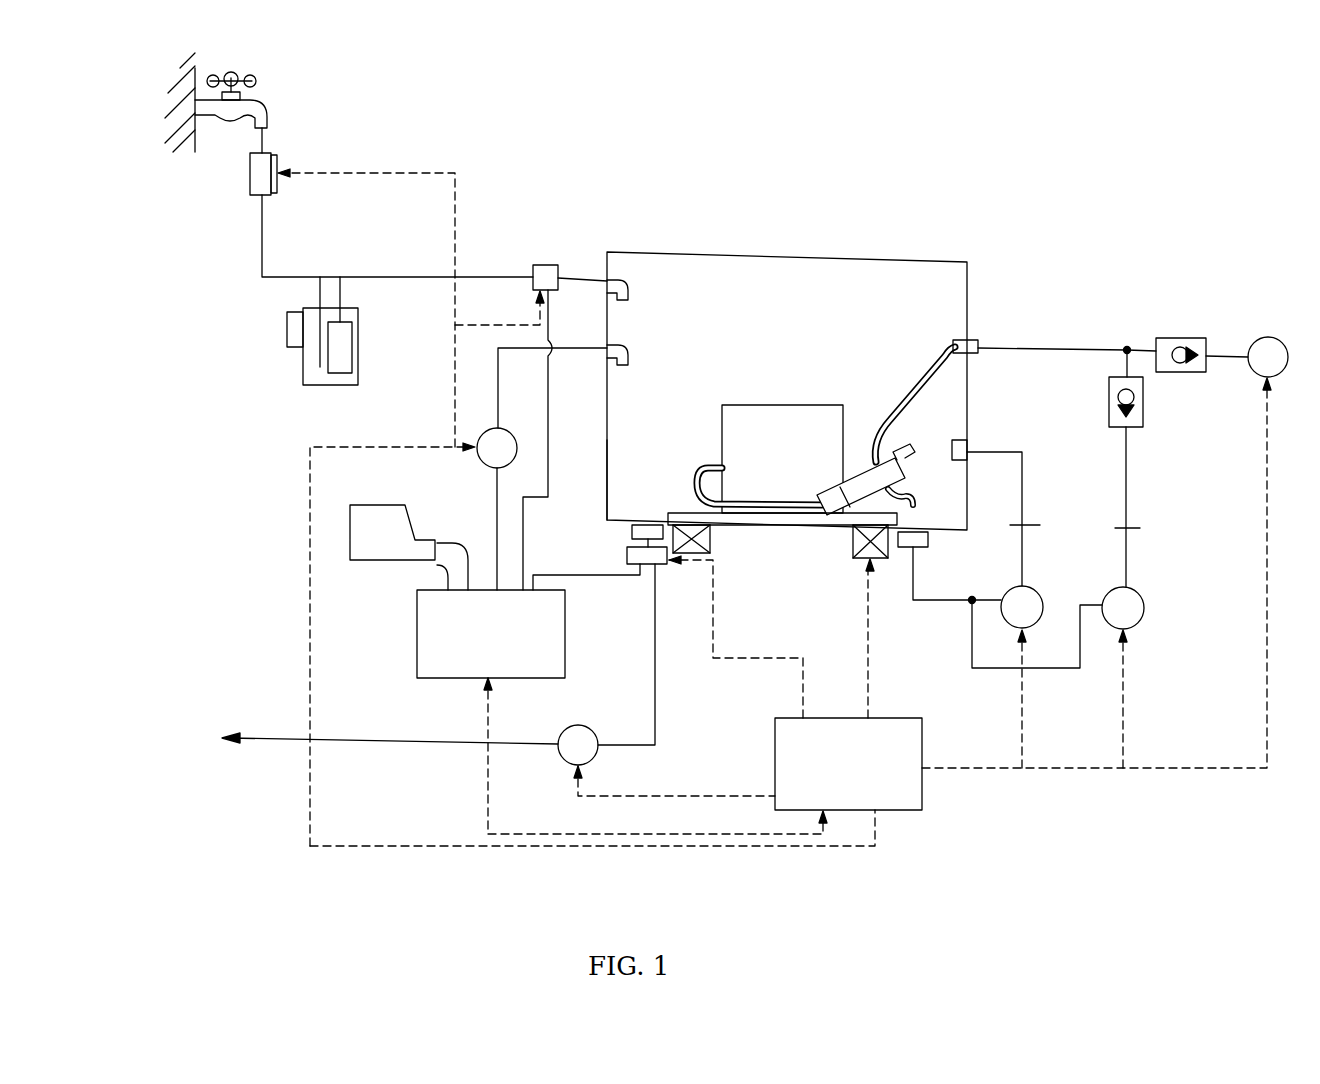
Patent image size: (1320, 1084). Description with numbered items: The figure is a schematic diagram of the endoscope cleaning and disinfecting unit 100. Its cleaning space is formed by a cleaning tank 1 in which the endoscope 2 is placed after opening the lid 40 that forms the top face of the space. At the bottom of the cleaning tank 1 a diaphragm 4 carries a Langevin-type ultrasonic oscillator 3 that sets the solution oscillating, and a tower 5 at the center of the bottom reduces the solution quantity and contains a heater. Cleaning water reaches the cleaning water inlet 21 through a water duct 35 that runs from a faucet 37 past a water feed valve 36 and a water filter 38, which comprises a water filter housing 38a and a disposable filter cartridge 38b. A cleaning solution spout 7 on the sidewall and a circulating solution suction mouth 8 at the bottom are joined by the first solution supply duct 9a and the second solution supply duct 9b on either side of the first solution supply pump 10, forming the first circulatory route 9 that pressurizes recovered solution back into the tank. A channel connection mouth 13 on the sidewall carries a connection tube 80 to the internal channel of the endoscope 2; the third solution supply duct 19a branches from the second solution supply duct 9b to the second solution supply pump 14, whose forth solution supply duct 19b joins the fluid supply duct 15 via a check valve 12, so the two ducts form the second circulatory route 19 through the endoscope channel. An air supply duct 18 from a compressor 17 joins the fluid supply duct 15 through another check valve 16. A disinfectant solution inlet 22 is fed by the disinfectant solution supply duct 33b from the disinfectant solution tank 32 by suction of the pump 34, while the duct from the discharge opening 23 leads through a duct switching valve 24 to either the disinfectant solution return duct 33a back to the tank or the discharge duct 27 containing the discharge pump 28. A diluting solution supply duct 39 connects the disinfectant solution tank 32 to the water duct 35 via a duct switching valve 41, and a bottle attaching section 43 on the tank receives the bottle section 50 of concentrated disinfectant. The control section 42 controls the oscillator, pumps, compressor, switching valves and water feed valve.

The cleaning tank 1 is at (606, 470).
The endoscope 2 is at (860, 422).
The ultrasonic oscillator 3 is at (712, 537).
The diaphragm 4 is at (800, 526).
The tower 5 is at (782, 404).
The cleaning solution spout 7 is at (970, 444).
The circulating solution suction mouth 8 is at (930, 547).
The first circulatory route 9 is at (1038, 525).
The first solution supply duct 9a is at (1023, 498).
The second solution supply duct 9b is at (940, 602).
The first solution supply pump 10 is at (1036, 590).
The check valve 12 is at (1108, 393).
The channel connection mouth 13 is at (975, 339).
The second solution supply pump 14 is at (1138, 590).
The fluid supply duct 15 is at (1057, 348).
The check valve 16 is at (1177, 337).
The compressor 17 is at (1269, 336).
The air supply duct 18 is at (1226, 358).
The second circulatory route 19 is at (1136, 528).
The third solution supply duct 19a is at (1060, 670).
The fourth solution supply duct 19b is at (1128, 498).
The cleaning water inlet 21 is at (630, 291).
The disinfectant solution inlet 22 is at (630, 356).
The discharge opening 23 is at (630, 533).
The duct switching valve 24 is at (662, 565).
The discharge duct 27 is at (657, 692).
The discharge pump 28 is at (590, 725).
The disinfectant solution tank 32 is at (416, 640).
The disinfectant solution return duct 33a is at (615, 577).
The disinfectant solution supply duct 33b is at (500, 405).
The pump 34 is at (484, 466).
The water duct 35 is at (500, 277).
The water feed valve 36 is at (249, 176).
The faucet 37 is at (268, 106).
The water filter 38 is at (302, 385).
The water filter housing 38a is at (360, 355).
The filter cartridge 38b is at (342, 340).
The diluting solution supply duct 39 is at (575, 396).
The lid 40 is at (882, 258).
The duct switching valve 41 is at (548, 264).
The control section 42 is at (923, 738).
The bottle attaching section 43 is at (475, 542).
The bottle section 50 is at (383, 505).
The connection tube 80 is at (932, 356).
The endoscope cleaning and disinfecting unit 100 is at (1063, 235).